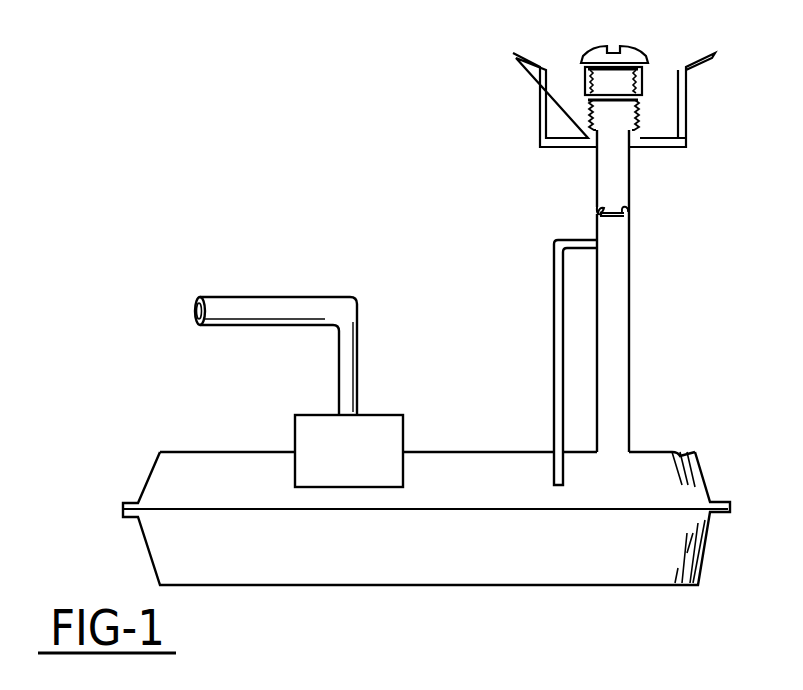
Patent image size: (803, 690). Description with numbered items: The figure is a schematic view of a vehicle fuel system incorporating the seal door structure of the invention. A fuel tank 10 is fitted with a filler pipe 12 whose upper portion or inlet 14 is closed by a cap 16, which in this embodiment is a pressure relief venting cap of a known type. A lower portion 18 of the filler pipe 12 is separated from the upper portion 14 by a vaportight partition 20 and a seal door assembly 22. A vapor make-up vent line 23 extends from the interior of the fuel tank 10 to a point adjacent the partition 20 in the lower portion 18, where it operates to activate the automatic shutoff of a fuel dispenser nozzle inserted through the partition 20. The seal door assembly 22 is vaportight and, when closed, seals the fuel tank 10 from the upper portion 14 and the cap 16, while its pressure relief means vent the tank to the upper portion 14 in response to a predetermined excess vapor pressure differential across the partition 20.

The fuel tank 10 is at (470, 586).
The filler pipe 12 is at (631, 398).
The upper portion 14 is at (612, 181).
The cap 16 is at (584, 63).
The lower portion 18 is at (611, 313).
The vaportight partition 20 is at (627, 209).
The seal door assembly 22 is at (606, 214).
The vapor make-up vent line 23 is at (558, 352).